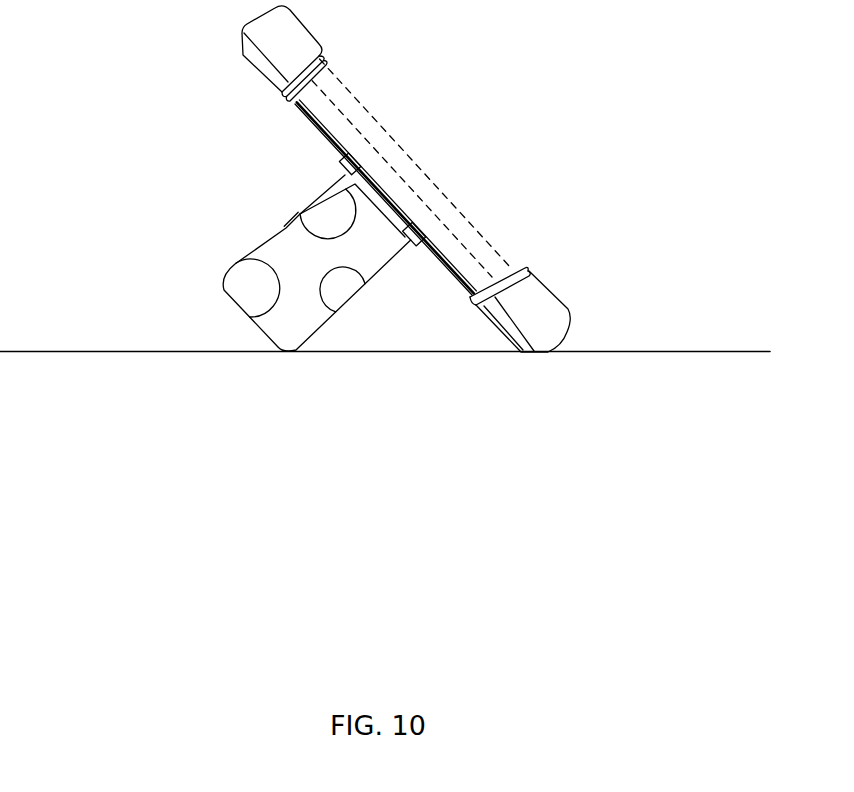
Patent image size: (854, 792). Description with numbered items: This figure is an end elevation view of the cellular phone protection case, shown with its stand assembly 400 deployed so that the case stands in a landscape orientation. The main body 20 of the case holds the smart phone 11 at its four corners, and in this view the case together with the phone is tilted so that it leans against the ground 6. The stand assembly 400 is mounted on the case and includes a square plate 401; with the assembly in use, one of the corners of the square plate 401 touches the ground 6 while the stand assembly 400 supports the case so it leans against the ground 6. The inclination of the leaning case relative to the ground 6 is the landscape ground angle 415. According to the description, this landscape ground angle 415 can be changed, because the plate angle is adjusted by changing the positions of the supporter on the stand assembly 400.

The ground 6 is at (658, 352).
The smart phone 11 is at (428, 190).
The main body 20 is at (306, 117).
The stand assembly 400 is at (300, 214).
The square plate 401 is at (290, 313).
The landscape ground angle 415 is at (487, 325).